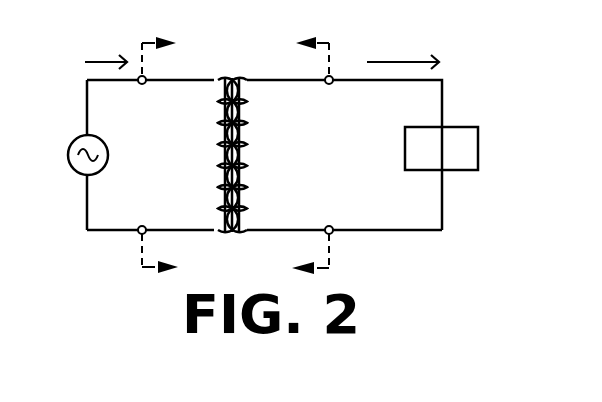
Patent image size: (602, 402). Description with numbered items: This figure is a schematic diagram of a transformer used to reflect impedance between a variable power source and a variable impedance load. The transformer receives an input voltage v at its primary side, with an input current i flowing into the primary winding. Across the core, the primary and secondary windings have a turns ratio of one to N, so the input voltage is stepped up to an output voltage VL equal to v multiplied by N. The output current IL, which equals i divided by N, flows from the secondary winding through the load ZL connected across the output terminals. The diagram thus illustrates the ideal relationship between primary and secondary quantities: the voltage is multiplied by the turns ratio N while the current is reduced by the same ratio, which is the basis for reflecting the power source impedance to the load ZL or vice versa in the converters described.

The voltage v is at (75, 155).
The load ZL is at (441, 148).
The turns ratio N is at (230, 137).
The current i is at (106, 50).
The current IL is at (401, 50).
The output voltage VL is at (499, 148).